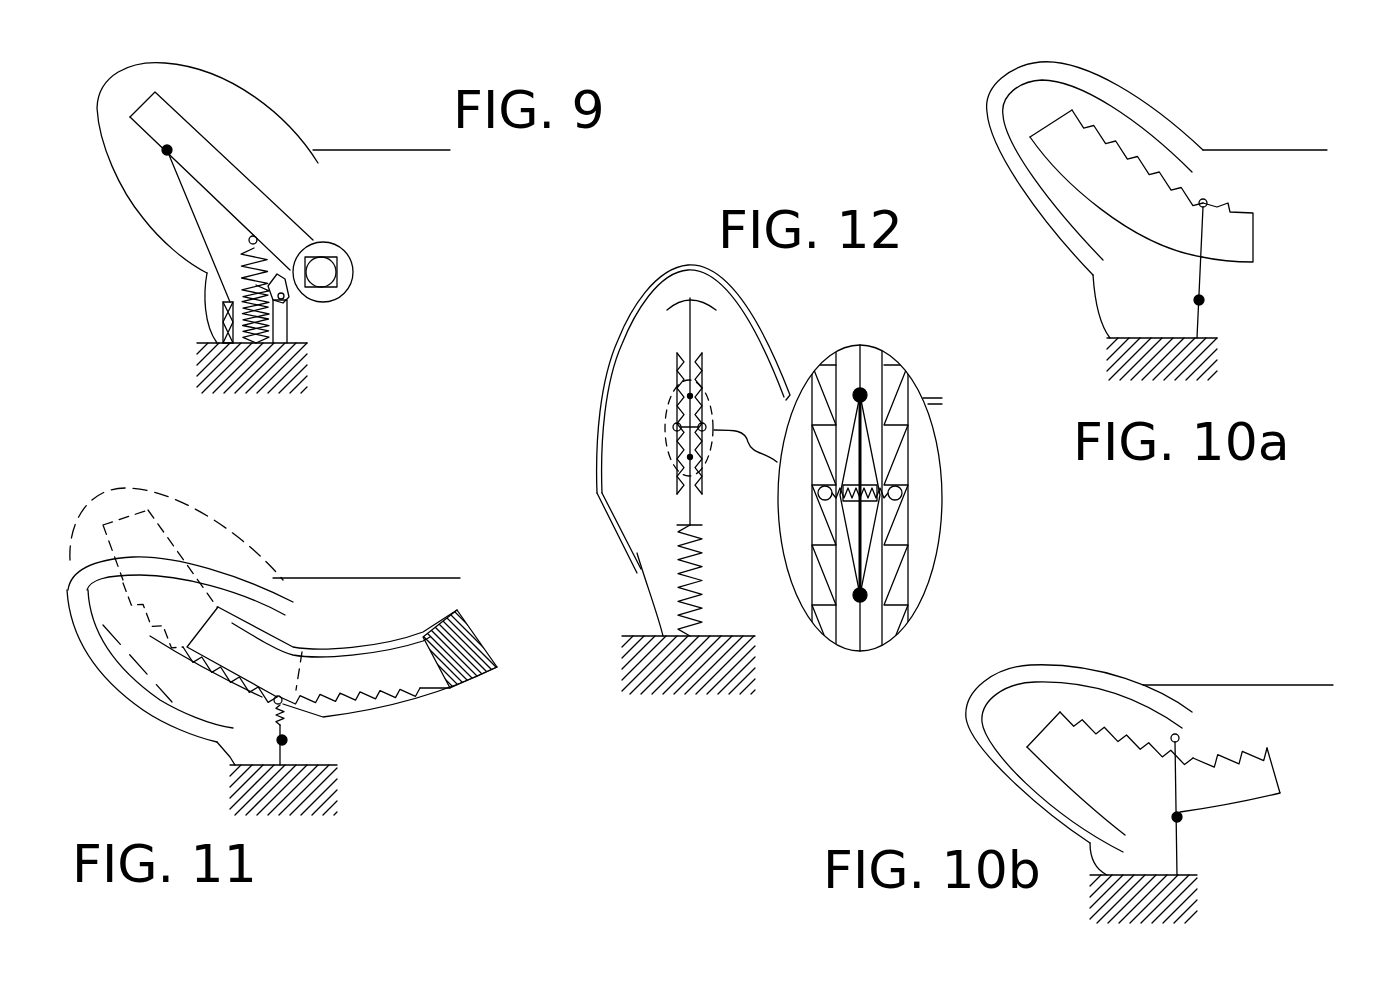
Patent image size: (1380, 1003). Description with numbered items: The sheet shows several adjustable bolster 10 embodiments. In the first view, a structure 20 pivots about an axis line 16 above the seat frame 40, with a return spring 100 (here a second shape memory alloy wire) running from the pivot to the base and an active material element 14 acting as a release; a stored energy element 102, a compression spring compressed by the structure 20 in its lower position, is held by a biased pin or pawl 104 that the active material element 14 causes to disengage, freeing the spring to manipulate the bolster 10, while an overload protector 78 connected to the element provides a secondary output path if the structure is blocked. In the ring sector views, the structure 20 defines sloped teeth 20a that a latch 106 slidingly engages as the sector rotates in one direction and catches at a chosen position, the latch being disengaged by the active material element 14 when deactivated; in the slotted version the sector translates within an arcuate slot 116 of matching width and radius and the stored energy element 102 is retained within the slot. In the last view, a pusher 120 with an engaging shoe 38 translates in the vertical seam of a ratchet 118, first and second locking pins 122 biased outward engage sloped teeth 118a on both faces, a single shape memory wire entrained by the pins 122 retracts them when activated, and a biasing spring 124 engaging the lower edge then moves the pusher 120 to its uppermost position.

In FIG. 10A, the bolster 10 is at (1154, 70).
In FIG. 11, the bolster 10 is at (249, 500).
In FIG. 12, the bolster 10 is at (609, 254).
In FIG. 9, the active material element 14 is at (290, 330).
In FIG. 10A, the active material element 14 is at (1200, 317).
In FIG. 10B, the active material element 14 is at (1180, 843).
In FIG. 11, the active material element 14 is at (287, 757).
In FIG. 12, the active material element 14 is at (860, 547).
In FIG. 9, the pivot axis line 16 is at (383, 150).
In FIG. 9, the structure 20 is at (237, 163).
In FIG. 10A, the structure 20 is at (1253, 213).
In FIG. 10B, the structure 20 is at (1267, 758).
In FIG. 11, the structure 20 is at (340, 657).
In FIG. 10B, the teeth 20a is at (1208, 747).
In FIG. 11, the teeth 20a is at (393, 697).
In FIG. 12, the engaging shoe 38 is at (689, 298).
In FIG. 12, the seat frame 40 is at (630, 640).
In FIG. 9, the overload protector 78 is at (220, 317).
In FIG. 9, the return spring 100 is at (190, 227).
In FIG. 9, the stored energy element 102 is at (274, 244).
In FIG. 11, the stored energy element 102 is at (480, 652).
In FIG. 9, the pawl 104 is at (283, 287).
In FIG. 10A, the latch 106 is at (1228, 244).
In FIG. 10B, the latch 106 is at (1199, 788).
In FIG. 11, the arcuate slot 116 is at (413, 635).
In FIG. 12, the vertical ratchet 118 is at (677, 373).
In FIG. 12, the sloped teeth 118a is at (903, 410).
In FIG. 12, the pusher 120 is at (689, 322).
In FIG. 12, the locking pin 122 is at (903, 495).
In FIG. 12, the biasing spring 124 is at (690, 598).